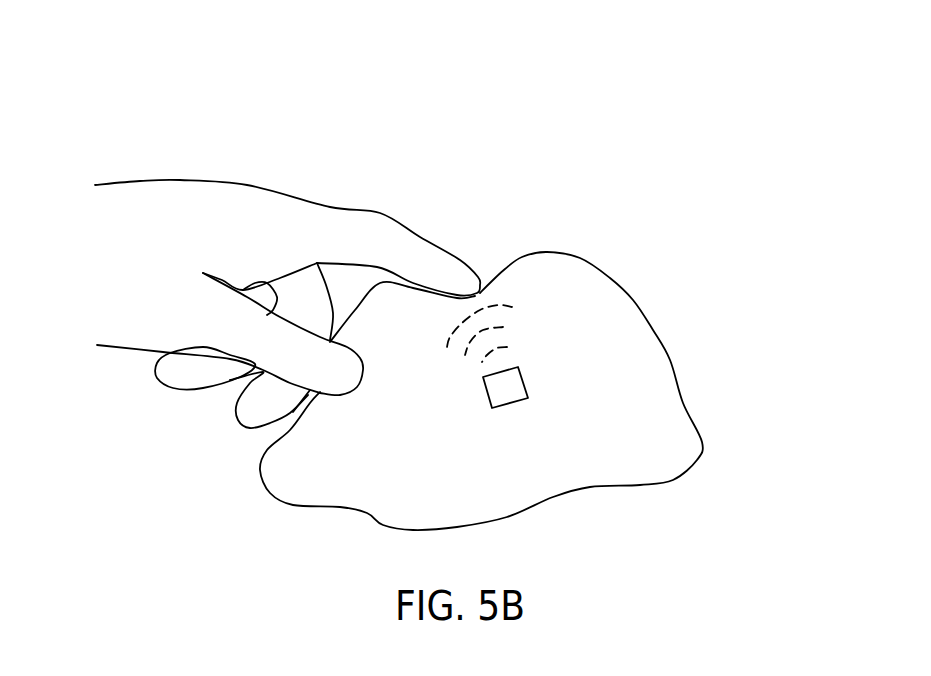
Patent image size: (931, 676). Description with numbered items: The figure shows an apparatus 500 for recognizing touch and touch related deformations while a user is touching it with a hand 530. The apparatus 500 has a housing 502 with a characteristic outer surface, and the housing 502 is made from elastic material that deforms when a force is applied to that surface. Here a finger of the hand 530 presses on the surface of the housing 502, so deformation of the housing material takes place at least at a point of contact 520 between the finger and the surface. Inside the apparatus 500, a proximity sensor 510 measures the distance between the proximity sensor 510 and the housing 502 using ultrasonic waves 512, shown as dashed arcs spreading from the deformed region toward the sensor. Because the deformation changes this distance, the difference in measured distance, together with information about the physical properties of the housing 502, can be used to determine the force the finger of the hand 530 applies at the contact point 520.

The apparatus 500 is at (650, 103).
The housing 502 is at (600, 280).
The proximity sensor 510 is at (502, 388).
The ultrasonic waves 512 is at (498, 305).
The point of contact 520 is at (473, 287).
The hand 530 is at (258, 203).